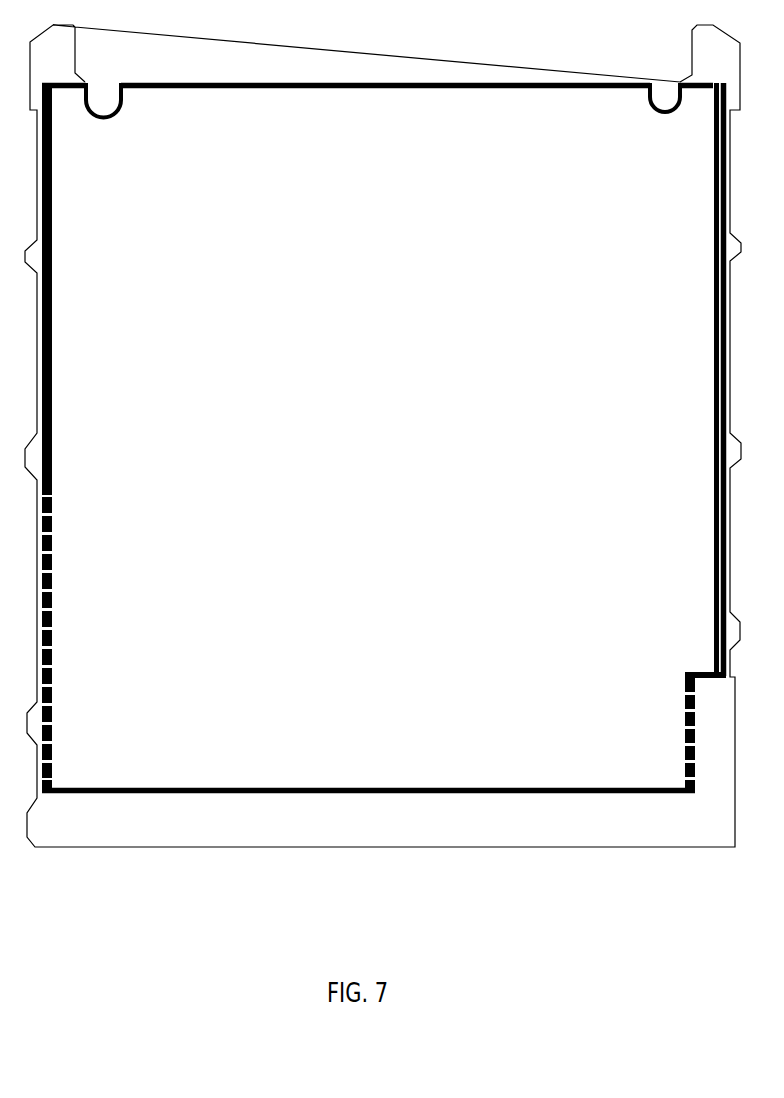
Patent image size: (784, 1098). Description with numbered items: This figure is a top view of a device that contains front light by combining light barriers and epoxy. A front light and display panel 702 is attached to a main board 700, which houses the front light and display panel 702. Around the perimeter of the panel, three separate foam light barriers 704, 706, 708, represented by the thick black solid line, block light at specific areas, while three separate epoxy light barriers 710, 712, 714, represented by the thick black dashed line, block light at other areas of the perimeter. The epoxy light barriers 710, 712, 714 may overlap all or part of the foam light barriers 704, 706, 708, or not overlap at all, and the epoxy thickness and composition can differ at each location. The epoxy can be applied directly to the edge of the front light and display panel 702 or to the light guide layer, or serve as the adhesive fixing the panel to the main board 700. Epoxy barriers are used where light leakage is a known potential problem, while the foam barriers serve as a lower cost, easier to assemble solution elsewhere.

The main board 700 is at (523, 828).
The front light and display panel 702 is at (278, 773).
The foam light barrier 704 is at (53, 723).
The foam light barrier 706 is at (53, 312).
The foam light barrier 708 is at (705, 405).
The epoxy light barrier 710 is at (53, 588).
The epoxy light barrier 712 is at (47, 793).
The epoxy light barrier 714 is at (677, 703).